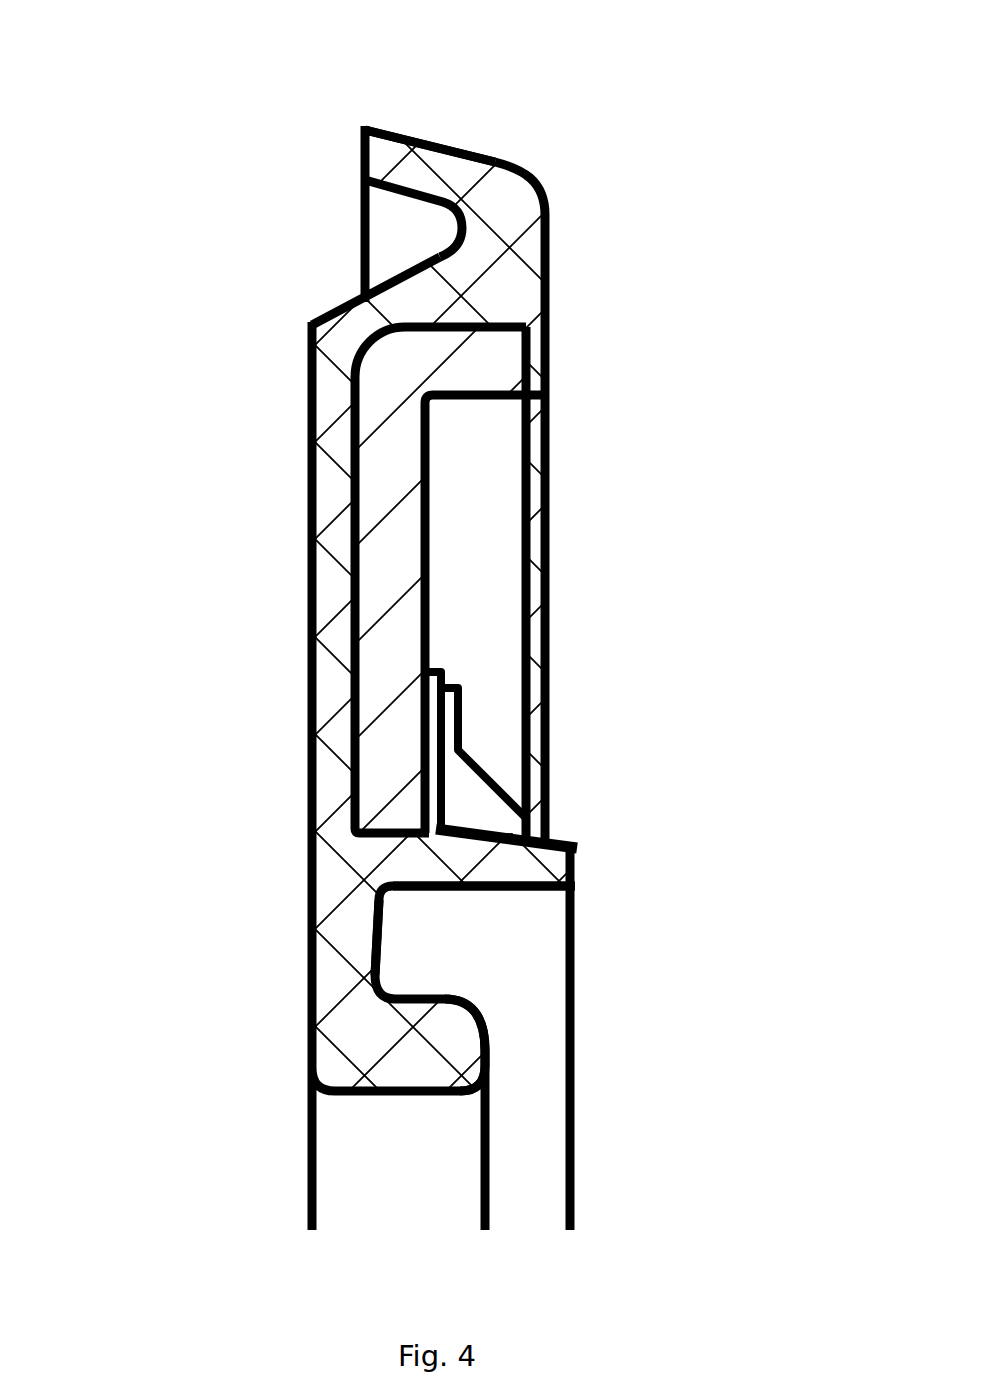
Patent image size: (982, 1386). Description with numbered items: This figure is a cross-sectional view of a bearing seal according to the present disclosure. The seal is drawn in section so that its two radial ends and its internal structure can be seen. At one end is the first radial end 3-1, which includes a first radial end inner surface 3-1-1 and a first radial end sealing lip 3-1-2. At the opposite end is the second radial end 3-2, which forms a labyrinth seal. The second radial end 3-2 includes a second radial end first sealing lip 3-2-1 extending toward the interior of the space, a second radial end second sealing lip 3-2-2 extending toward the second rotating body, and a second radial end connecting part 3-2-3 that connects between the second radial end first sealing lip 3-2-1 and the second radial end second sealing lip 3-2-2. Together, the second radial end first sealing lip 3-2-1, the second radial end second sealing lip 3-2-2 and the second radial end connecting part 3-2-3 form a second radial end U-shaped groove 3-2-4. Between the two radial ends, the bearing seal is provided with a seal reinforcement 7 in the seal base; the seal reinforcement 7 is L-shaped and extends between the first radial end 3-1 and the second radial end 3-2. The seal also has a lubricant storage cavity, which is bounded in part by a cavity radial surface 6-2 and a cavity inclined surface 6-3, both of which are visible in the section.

The first radial end 3-1 is at (505, 290).
The first radial end inner surface 3-1-1 is at (545, 197).
The first radial end sealing lip 3-1-2 is at (411, 172).
The second radial end 3-2 is at (360, 1023).
The second radial end first sealing lip 3-2-1 is at (515, 873).
The second radial end second sealing lip 3-2-2 is at (463, 1042).
The second radial end connecting part 3-2-3 is at (352, 932).
The second radial end U-shaped groove 3-2-4 is at (445, 968).
The cavity radial surface 6-2 is at (447, 768).
The cavity inclined surface 6-3 is at (530, 813).
The seal reinforcement 7 is at (393, 555).